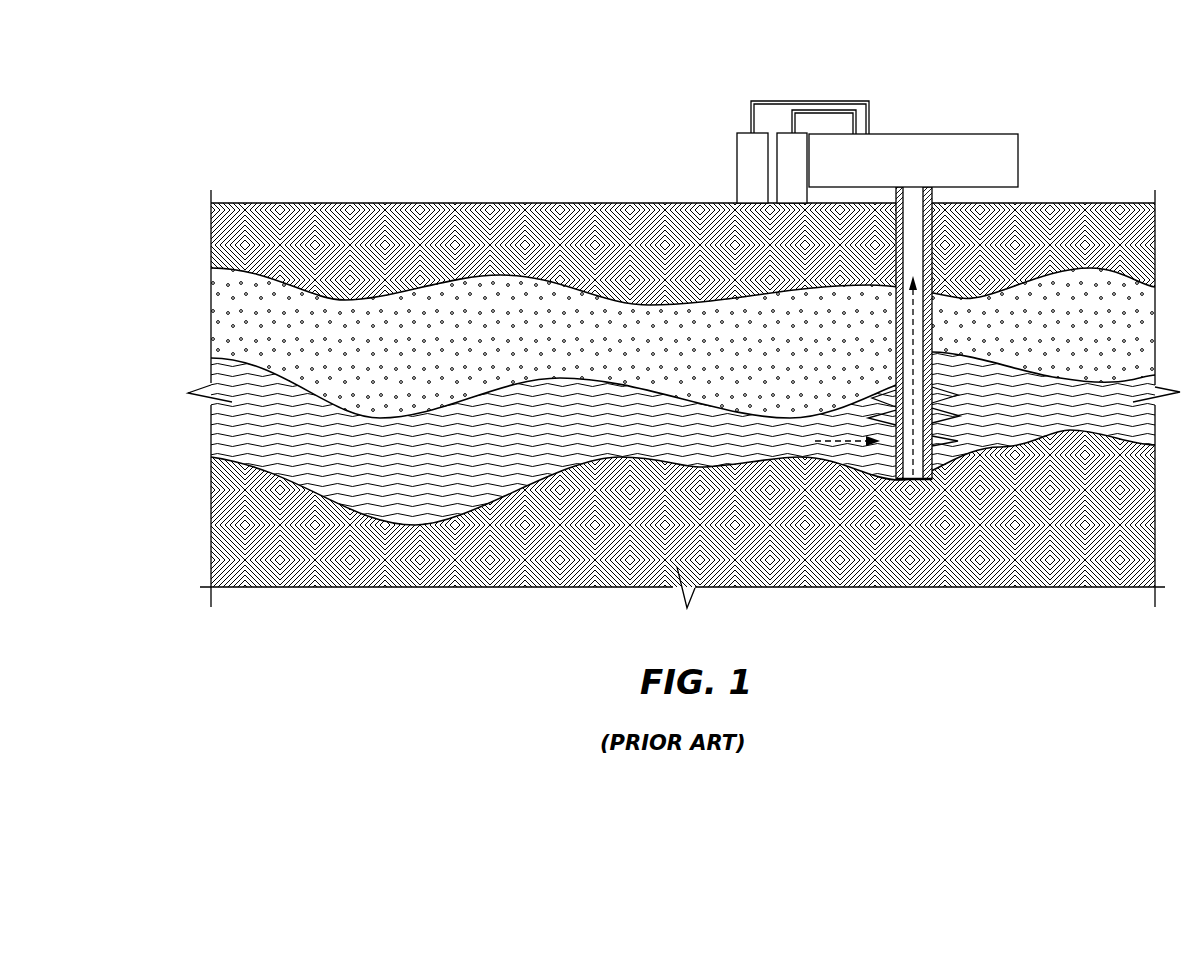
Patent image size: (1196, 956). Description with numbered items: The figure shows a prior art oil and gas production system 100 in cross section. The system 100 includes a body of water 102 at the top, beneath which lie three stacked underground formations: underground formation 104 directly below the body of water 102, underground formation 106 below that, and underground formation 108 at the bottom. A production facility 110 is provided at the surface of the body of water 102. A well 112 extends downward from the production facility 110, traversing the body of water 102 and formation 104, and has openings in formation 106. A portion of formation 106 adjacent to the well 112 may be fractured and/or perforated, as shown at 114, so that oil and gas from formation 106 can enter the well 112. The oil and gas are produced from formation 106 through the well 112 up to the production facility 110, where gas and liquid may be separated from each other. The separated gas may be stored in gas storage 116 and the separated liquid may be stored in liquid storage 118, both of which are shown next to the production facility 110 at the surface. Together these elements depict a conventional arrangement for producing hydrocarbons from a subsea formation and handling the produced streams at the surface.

The prior art system 100 is at (240, 80).
The body of water 102 is at (706, 257).
The underground formation 104 is at (706, 356).
The underground formation 106 is at (706, 438).
The underground formation 108 is at (706, 527).
The production facility 110 is at (938, 172).
The well 112 is at (918, 248).
The fractured and/or perforated portion 114 is at (937, 442).
The gas storage 116 is at (798, 142).
The liquid storage 118 is at (757, 142).